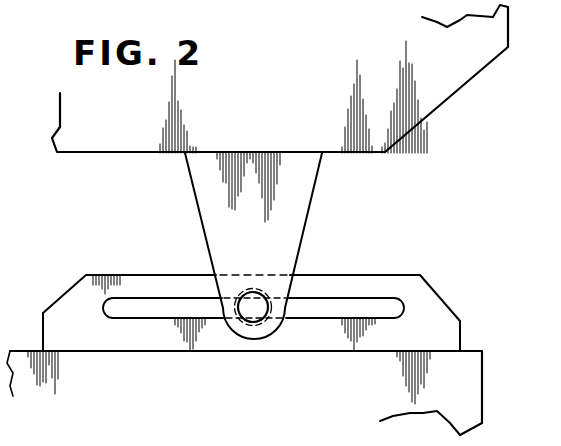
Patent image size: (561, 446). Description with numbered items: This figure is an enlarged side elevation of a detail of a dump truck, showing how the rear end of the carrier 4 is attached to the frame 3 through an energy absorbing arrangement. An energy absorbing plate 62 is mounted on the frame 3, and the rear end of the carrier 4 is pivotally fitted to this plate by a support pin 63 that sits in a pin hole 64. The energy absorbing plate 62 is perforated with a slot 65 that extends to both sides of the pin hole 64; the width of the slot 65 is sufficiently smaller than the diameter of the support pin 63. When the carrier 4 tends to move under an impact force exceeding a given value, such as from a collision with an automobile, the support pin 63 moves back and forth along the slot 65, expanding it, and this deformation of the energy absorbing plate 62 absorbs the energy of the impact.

The frame 3 is at (472, 386).
The carrier 4 is at (427, 95).
The energy absorbing plate 62 is at (427, 298).
The support pin 63 is at (255, 300).
The pin hole 64 is at (258, 316).
The slot 65 is at (152, 312).